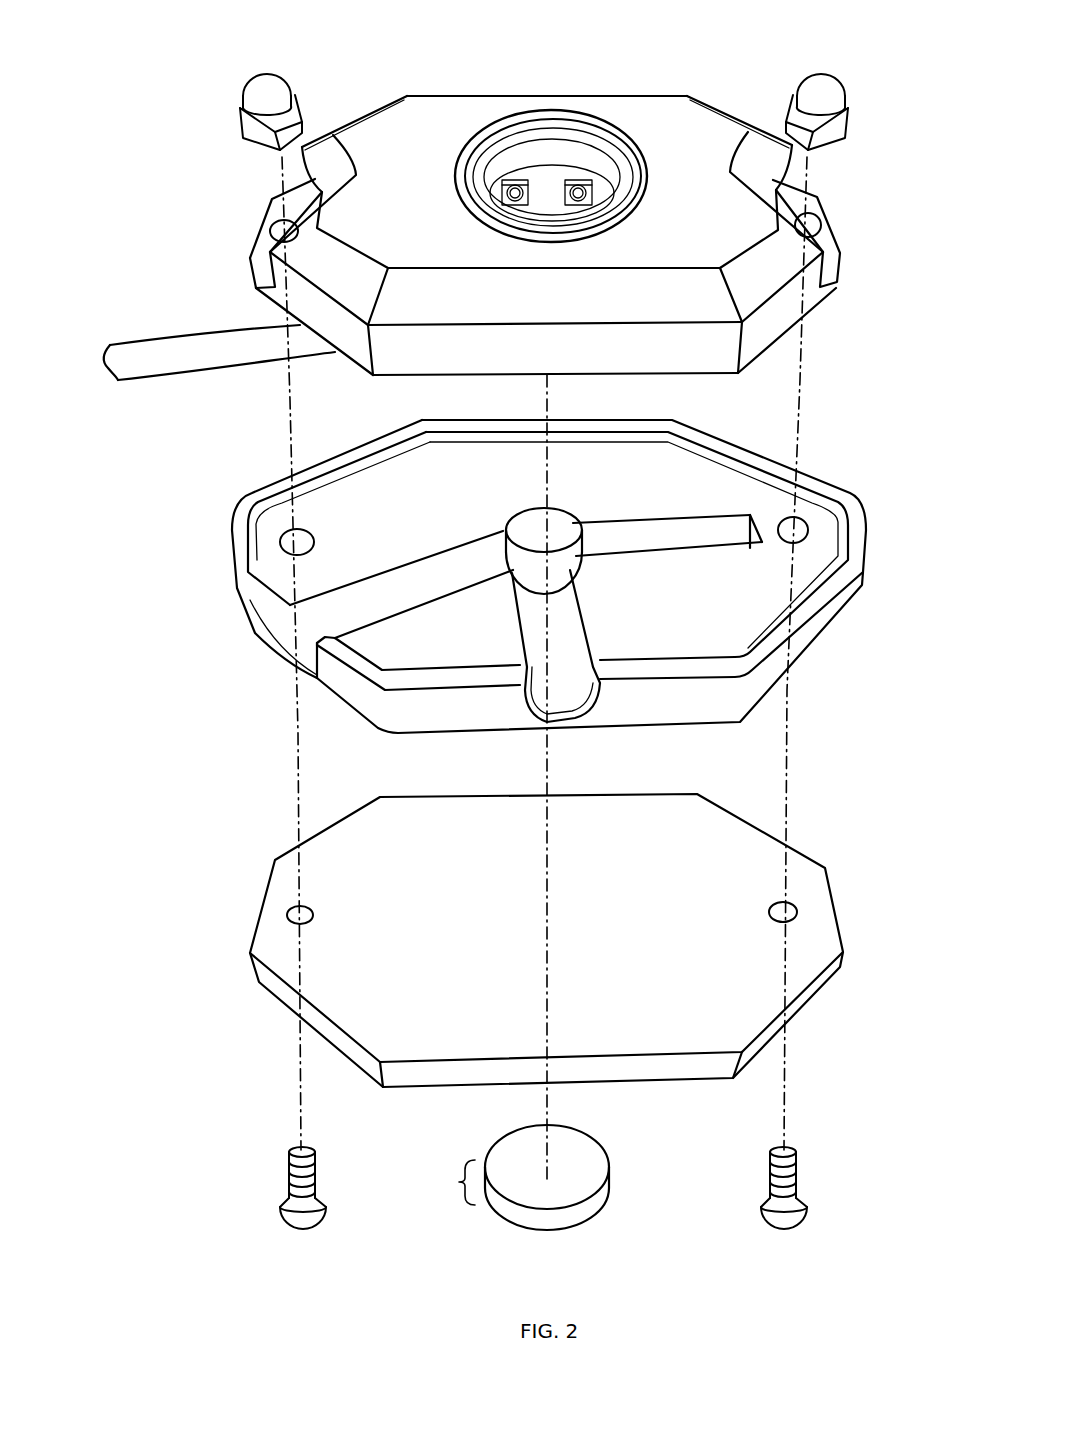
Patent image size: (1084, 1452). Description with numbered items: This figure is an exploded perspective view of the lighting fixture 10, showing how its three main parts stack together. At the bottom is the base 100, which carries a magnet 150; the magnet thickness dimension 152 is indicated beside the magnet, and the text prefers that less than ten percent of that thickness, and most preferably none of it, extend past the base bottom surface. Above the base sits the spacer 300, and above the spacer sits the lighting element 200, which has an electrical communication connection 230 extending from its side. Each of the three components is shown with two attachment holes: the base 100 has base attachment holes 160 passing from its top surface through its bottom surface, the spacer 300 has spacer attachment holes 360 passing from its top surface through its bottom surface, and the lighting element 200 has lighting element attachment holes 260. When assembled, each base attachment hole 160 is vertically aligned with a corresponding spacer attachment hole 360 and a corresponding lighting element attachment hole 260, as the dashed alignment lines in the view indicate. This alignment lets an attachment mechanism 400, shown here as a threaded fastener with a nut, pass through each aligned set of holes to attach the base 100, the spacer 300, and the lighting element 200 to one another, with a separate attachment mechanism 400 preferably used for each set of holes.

The lighting fixture 10 is at (170, 68).
The base 100 is at (808, 924).
The magnet 150 is at (590, 1156).
The magnet thickness dimension 152 is at (448, 1182).
The base attachment hole 160 is at (300, 905).
The lighting element 200 is at (432, 112).
The electrical communication connection 230 is at (172, 350).
The lighting element attachment hole 260 is at (276, 230).
The spacer 300 is at (718, 483).
The spacer attachment hole 360 is at (282, 535).
The attachment mechanism 400 is at (270, 80).